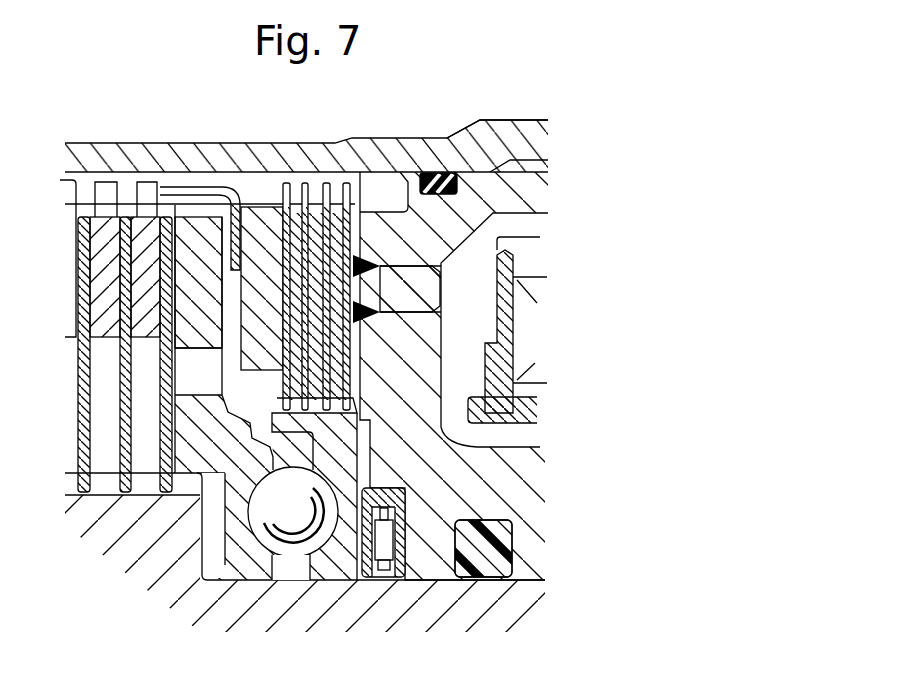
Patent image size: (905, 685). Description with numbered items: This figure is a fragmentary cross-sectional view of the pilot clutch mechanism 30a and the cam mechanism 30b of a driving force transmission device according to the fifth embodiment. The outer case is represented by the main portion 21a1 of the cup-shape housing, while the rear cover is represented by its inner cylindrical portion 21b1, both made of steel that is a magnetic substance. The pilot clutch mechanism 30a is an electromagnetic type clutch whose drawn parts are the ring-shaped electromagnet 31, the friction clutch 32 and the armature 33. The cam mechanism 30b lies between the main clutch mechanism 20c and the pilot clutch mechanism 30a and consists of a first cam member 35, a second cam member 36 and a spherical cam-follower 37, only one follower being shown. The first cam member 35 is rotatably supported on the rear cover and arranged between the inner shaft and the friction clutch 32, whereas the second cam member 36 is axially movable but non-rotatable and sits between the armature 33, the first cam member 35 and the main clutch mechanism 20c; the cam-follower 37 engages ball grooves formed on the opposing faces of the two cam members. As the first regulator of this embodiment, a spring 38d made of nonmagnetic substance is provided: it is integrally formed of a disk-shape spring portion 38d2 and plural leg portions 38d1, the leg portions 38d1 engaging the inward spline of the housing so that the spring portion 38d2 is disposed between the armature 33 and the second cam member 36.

The main clutch mechanism 20c is at (87, 172).
The spring 38d is at (210, 176).
The leg portions 38d1 is at (173, 190).
The disk-shape spring portion 38d2 is at (245, 195).
The armature 33 is at (283, 205).
The friction clutch 32 is at (362, 193).
The main portion 21a1 is at (508, 132).
The pilot clutch mechanism 30a is at (553, 217).
The electromagnet 31 is at (552, 350).
The second cam member 36 is at (187, 453).
The cam-follower 37 is at (263, 523).
The cam mechanism 30b is at (292, 567).
The first cam member 35 is at (350, 573).
The inner cylindrical portion 21b1 is at (430, 560).